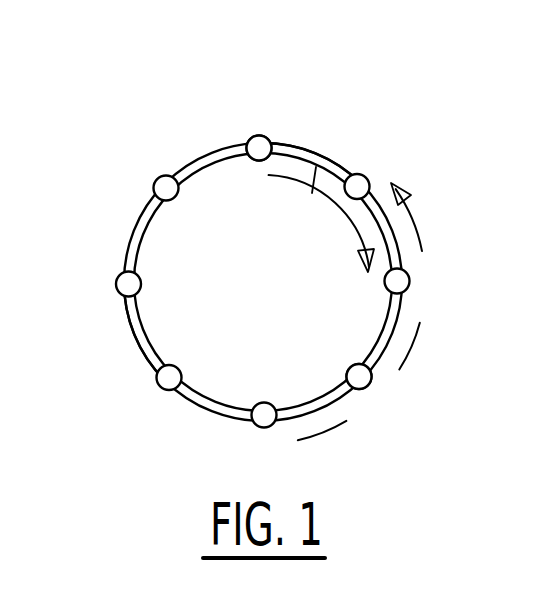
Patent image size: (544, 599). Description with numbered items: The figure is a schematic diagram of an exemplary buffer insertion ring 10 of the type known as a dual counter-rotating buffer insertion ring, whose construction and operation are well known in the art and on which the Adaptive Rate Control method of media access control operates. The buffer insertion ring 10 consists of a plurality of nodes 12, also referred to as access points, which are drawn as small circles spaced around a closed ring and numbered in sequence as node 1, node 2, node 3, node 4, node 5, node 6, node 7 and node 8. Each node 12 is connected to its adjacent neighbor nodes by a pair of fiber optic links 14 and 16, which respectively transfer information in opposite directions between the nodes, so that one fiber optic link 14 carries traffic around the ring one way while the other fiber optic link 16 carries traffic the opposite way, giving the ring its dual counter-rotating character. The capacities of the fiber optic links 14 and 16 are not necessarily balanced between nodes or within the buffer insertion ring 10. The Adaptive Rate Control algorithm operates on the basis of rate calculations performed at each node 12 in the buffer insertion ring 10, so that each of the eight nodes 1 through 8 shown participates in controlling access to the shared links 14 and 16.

The buffer insertion ring 10 is at (432, 203).
The node 12 is at (261, 140).
The fiber optic link 14 is at (337, 157).
The fiber optic link 16 is at (313, 183).
The node 1 is at (259, 131).
The node 2 is at (364, 171).
The node 3 is at (407, 278).
The node 4 is at (364, 394).
The node 5 is at (264, 434).
The node 6 is at (166, 392).
The node 7 is at (119, 283).
The node 8 is at (158, 174).